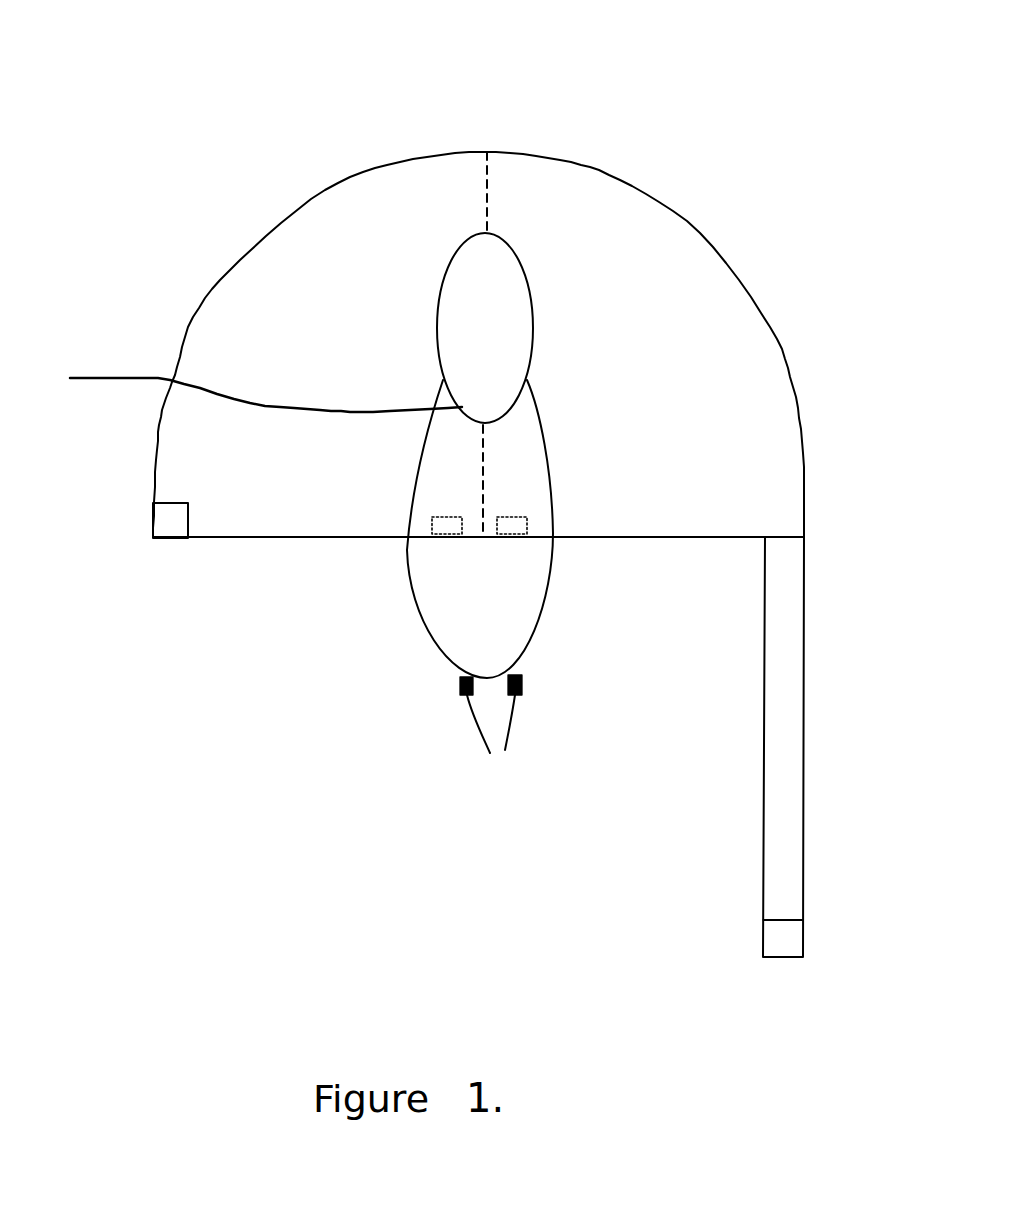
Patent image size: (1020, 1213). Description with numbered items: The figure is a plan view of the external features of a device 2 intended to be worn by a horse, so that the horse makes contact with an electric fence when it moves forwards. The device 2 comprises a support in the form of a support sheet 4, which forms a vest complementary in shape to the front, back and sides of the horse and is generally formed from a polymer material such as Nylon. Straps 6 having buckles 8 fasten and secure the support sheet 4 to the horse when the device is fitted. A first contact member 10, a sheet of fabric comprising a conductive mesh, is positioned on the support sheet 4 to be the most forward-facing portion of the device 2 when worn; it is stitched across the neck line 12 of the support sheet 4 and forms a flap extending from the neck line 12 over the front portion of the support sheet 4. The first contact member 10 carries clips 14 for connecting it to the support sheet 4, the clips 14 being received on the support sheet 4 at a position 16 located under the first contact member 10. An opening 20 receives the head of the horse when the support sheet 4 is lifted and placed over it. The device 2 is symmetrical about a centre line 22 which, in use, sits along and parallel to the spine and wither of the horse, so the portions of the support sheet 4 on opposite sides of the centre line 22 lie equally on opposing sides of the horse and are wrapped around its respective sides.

The device 2 is at (189, 733).
The support sheet 4 is at (635, 262).
The straps 6 is at (787, 733).
The buckles 8 is at (170, 522).
The first contact member 10 is at (483, 602).
The neck line 12 is at (244, 385).
The clips 14 is at (492, 732).
The position 16 is at (493, 538).
The opening 20 is at (483, 292).
The centre line 22 is at (482, 177).